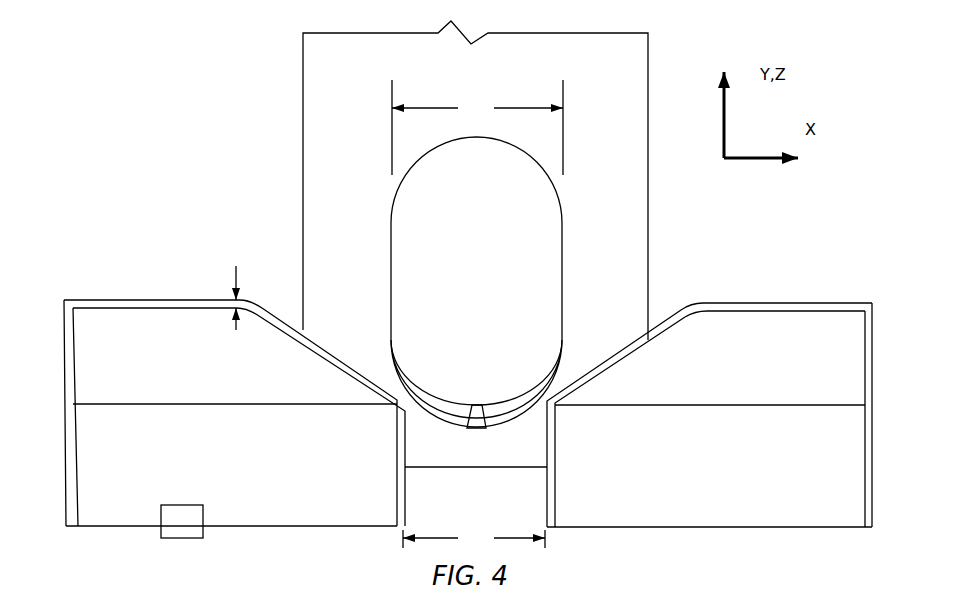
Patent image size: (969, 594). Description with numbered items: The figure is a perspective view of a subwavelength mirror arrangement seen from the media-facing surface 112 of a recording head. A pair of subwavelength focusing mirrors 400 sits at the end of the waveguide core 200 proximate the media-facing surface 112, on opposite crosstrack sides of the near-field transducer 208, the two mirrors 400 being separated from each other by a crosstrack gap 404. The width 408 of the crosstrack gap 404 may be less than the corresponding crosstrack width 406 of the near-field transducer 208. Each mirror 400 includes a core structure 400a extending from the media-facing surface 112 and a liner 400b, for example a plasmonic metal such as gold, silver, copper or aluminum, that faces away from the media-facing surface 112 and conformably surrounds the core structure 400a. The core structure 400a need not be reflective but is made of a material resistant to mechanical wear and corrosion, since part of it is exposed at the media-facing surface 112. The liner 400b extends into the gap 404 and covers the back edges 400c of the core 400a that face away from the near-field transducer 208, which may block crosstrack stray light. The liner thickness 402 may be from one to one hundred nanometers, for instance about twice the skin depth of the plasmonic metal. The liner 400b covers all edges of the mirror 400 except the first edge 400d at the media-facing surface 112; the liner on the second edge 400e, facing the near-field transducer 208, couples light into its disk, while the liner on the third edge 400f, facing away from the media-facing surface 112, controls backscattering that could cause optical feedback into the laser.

The waveguide core 200 is at (303, 57).
The near-field transducer 208 is at (355, 220).
The subwavelength focusing mirror 400 is at (469, 376).
The core structure 400a is at (110, 332).
The liner 400b is at (198, 300).
The back edges 400c is at (73, 368).
The first edge 400d is at (291, 498).
The second edge 400e is at (335, 363).
The third edge 400f is at (171, 300).
The liner thickness 402 is at (238, 288).
The crosstrack gap 404 is at (476, 483).
The crosstrack width of the NFT 406 is at (477, 127).
The width of crosstrack gap 408 is at (474, 538).
The media-facing surface 112 is at (180, 538).